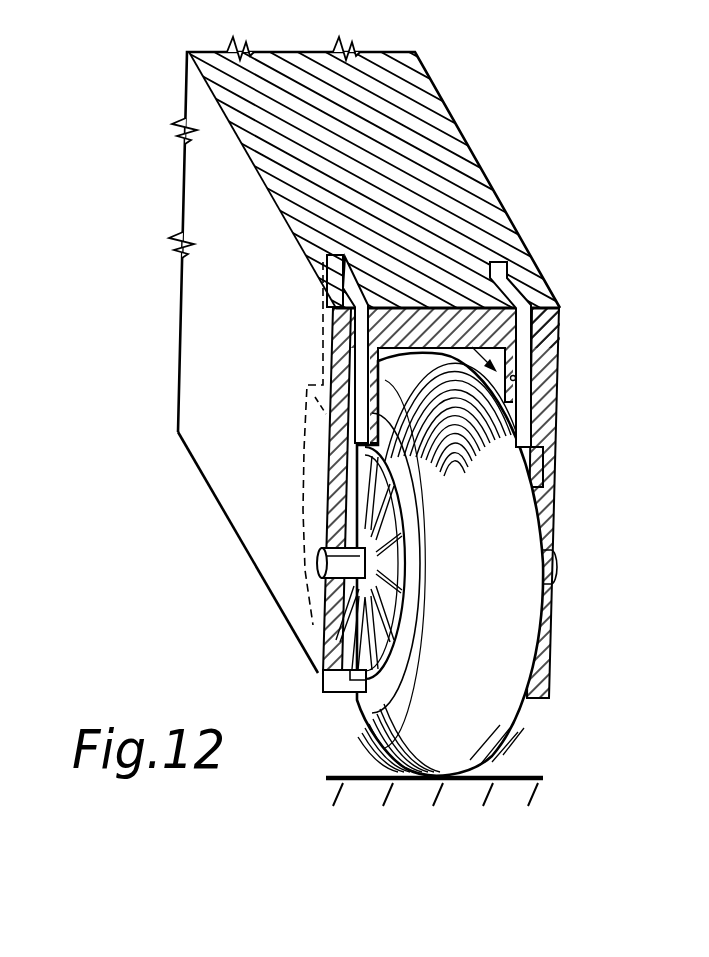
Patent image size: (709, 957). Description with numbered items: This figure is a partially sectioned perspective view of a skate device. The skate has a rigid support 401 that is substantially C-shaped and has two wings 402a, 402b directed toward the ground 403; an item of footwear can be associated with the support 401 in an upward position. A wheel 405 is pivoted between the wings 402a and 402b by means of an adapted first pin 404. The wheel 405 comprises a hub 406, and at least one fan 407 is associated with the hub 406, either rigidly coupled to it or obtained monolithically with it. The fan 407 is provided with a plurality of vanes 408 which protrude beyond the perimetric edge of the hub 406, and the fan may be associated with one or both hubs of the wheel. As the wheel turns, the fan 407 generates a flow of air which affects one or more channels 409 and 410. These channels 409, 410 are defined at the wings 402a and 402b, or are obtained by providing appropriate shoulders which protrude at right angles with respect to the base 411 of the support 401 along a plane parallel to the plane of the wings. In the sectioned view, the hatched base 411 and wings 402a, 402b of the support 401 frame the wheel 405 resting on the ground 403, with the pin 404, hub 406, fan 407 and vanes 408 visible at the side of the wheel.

The rigid support 401 is at (440, 104).
The wing 402a is at (550, 657).
The wing 402b is at (293, 592).
The ground 403 is at (523, 776).
The first pin 404 is at (355, 561).
The wheel 405 is at (473, 457).
The hub 406 is at (412, 580).
The fan 407 is at (310, 631).
The vanes 408 is at (335, 685).
The channel 409 is at (333, 250).
The channel 410 is at (540, 255).
The base 411 is at (522, 382).